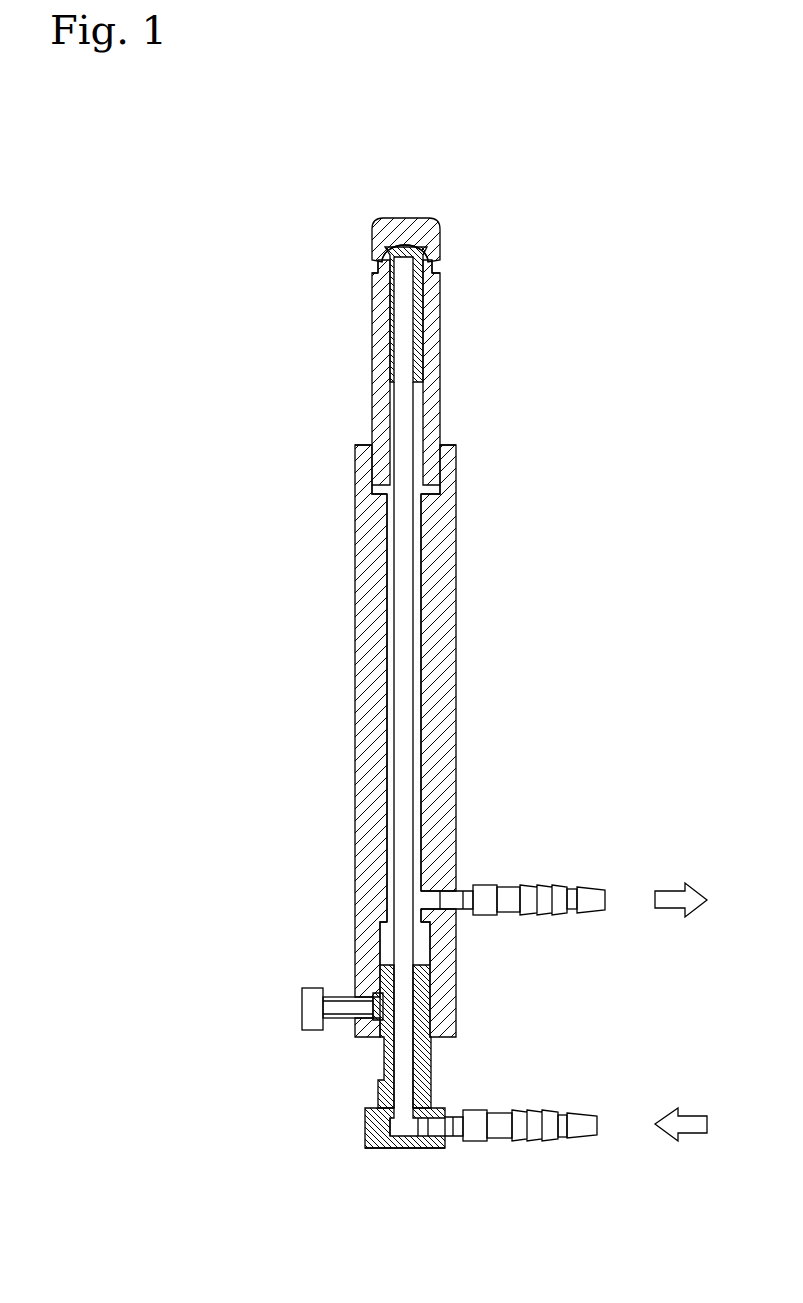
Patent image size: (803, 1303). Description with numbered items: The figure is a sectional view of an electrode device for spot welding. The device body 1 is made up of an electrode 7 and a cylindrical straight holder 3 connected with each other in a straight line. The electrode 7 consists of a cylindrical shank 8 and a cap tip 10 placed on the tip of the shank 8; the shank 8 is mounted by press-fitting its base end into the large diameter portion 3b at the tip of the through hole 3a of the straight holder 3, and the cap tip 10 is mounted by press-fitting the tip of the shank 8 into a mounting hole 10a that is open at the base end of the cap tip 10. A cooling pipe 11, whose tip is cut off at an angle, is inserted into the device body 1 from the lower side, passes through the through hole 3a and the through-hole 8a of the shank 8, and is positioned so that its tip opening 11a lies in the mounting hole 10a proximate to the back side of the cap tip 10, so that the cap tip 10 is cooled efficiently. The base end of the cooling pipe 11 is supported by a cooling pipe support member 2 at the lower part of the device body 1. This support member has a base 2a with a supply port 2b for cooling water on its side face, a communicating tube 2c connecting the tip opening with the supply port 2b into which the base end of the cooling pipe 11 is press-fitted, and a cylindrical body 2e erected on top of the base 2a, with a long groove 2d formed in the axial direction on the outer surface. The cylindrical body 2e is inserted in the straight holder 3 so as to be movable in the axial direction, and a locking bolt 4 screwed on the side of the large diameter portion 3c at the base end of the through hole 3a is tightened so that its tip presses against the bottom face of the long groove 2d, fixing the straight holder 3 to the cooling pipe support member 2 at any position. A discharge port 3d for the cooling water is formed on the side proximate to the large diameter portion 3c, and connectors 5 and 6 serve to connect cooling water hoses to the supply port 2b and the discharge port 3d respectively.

The device body 1 is at (346, 758).
The cooling pipe support member 2 is at (437, 1081).
The base 2a is at (366, 1136).
The supply port 2b is at (447, 1122).
The communicating tube 2c is at (377, 1100).
The long groove 2d is at (377, 1052).
The cylindrical body 2e is at (435, 1052).
The straight holder 3 is at (450, 571).
The through hole 3a is at (386, 655).
The large diameter portion 3b is at (450, 456).
The large diameter portion 3c is at (425, 939).
The discharge port 3d is at (457, 900).
The locking bolt 4 is at (302, 1000).
The connector 5 is at (545, 1127).
The connector 6 is at (560, 887).
The electrode 7 is at (367, 276).
The shank 8 is at (368, 367).
The through-hole 8a is at (420, 326).
The cap tip 10 is at (425, 222).
The mounting hole 10a is at (400, 250).
The cooling pipe 11 is at (398, 564).
The tip opening 11a is at (375, 250).